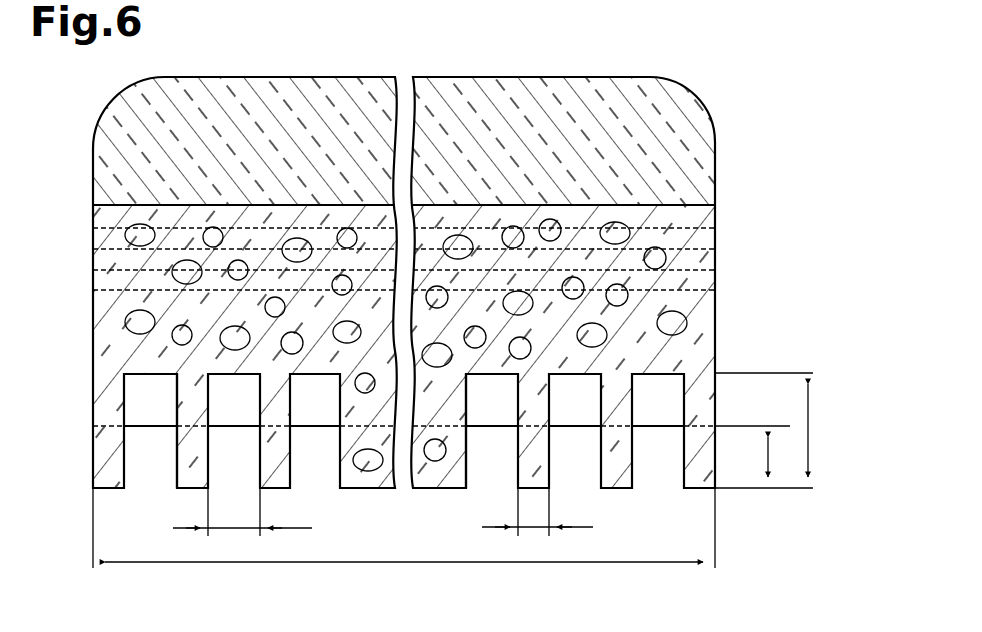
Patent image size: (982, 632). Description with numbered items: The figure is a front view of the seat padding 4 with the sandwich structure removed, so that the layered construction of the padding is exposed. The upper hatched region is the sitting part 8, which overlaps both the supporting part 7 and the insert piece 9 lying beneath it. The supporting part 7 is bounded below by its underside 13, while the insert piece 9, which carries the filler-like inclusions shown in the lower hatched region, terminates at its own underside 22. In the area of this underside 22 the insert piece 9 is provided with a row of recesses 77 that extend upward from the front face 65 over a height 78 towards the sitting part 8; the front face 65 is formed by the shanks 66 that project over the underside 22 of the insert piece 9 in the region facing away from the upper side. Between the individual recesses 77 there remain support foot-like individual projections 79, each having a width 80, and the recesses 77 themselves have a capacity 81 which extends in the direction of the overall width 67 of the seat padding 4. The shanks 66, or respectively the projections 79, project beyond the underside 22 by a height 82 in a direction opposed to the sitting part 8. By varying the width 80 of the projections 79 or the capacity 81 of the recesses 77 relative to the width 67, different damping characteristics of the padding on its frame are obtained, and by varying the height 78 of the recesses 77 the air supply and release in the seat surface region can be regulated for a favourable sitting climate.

The seat padding 4 is at (747, 72).
The sitting part 8 is at (699, 155).
The insert piece 9 is at (699, 303).
The supporting part 7 is at (146, 406).
The underside 13 is at (155, 436).
The underside 22 is at (306, 436).
The front face 65 is at (441, 488).
The shank 66 is at (706, 503).
The width 67 is at (405, 563).
The recess 77 is at (463, 406).
The height 78 is at (815, 422).
The support foot-like projection 79 is at (93, 490).
The width 80 is at (574, 512).
The capacity 81 is at (230, 529).
The height 82 is at (773, 451).